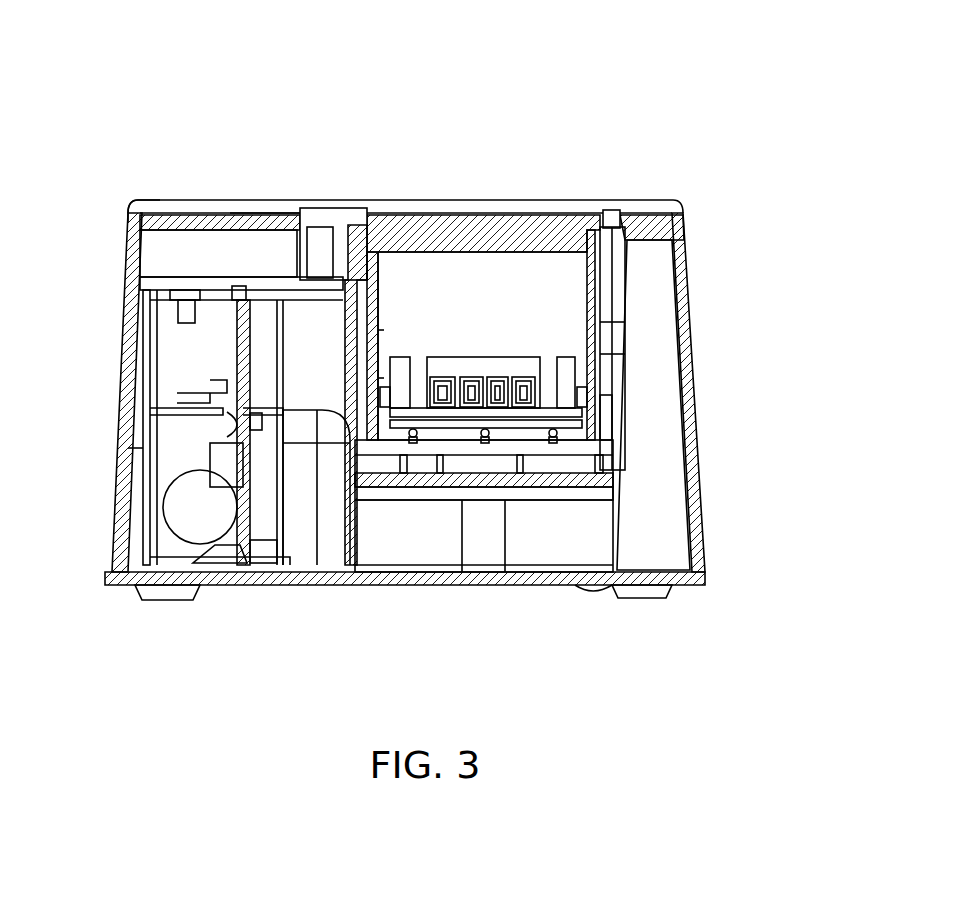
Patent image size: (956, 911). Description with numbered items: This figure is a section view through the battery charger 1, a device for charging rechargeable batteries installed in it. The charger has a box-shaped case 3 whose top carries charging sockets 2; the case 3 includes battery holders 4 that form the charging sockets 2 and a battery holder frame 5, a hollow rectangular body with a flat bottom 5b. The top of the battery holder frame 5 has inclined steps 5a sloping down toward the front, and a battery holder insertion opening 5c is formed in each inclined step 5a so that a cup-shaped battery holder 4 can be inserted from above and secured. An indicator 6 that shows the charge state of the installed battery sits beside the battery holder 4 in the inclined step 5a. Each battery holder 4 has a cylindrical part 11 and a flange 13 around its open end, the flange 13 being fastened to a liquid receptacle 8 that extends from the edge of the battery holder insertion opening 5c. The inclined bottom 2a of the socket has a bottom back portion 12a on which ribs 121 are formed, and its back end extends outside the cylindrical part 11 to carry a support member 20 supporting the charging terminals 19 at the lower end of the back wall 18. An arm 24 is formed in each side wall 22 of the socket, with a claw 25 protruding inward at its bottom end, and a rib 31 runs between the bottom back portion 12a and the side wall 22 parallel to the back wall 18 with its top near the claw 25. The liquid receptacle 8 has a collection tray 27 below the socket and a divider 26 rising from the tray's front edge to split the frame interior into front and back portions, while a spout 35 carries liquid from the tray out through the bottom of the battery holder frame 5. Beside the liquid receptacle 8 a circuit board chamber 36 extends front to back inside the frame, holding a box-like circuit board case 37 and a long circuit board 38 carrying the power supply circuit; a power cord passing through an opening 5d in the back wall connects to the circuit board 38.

The battery charger 1 is at (500, 78).
The charging socket 2 is at (508, 191).
The bottom of the charging socket 2a is at (418, 460).
The case 3 is at (160, 205).
The battery holder 4 is at (435, 213).
The battery holder frame 5 is at (130, 276).
The inclined step 5a is at (268, 210).
The flat bottom 5b is at (483, 585).
The battery holder insertion opening 5c is at (312, 216).
The opening 5d is at (168, 490).
The indicator 6 is at (238, 288).
The liquid receptacle 8 is at (628, 297).
The cylindrical part 11 is at (640, 275).
The bottom back portion 12a is at (395, 460).
The flange 13 is at (344, 225).
The back wall 18 is at (548, 270).
The charging terminals 19 is at (472, 378).
The support member 20 is at (446, 378).
The side wall 22 is at (378, 300).
The arm 24 is at (378, 330).
The claw 25 is at (385, 378).
The divider 26 is at (513, 500).
The collection tray 27 is at (540, 490).
The rib 31 is at (350, 470).
The spout 35 is at (460, 575).
The circuit board chamber 36 is at (220, 280).
The circuit board case 37 is at (145, 507).
The circuit board 38 is at (213, 545).
The rib 121 is at (488, 433).